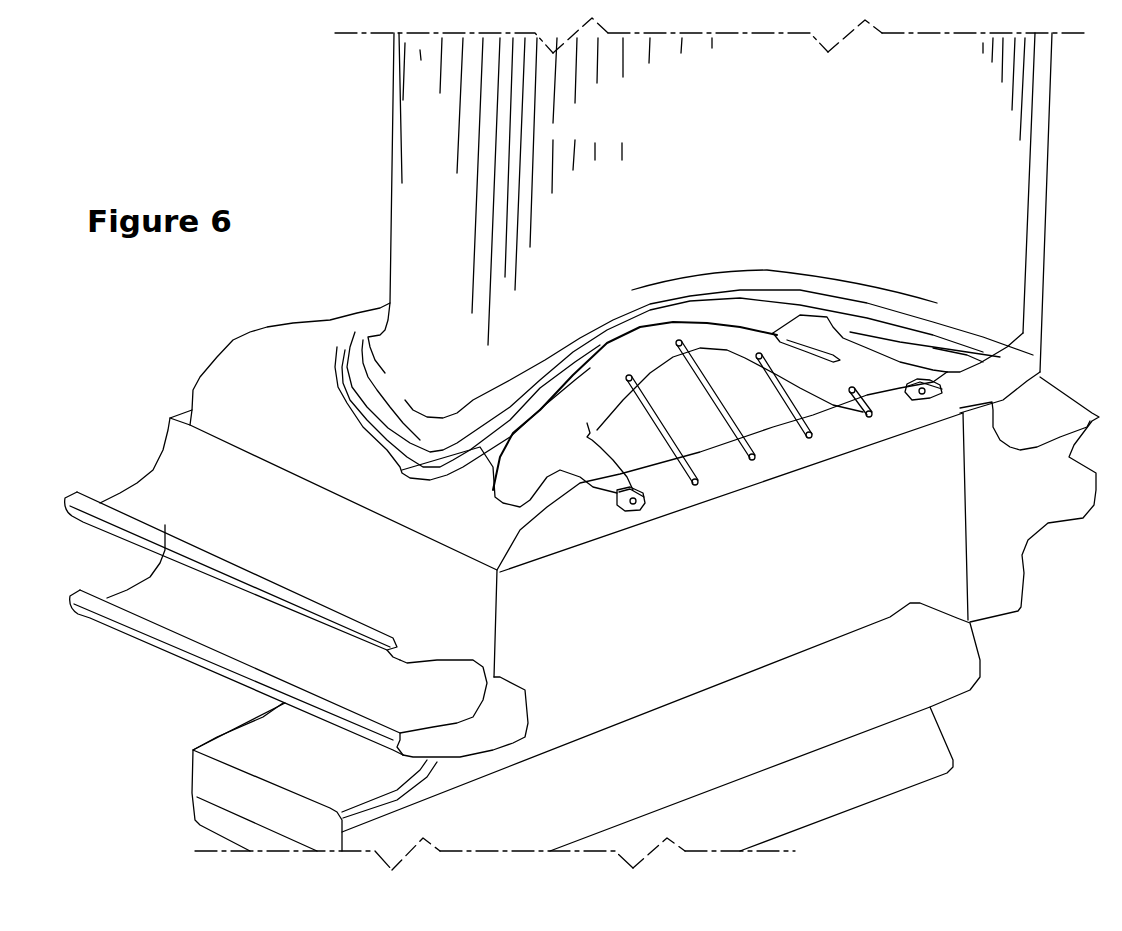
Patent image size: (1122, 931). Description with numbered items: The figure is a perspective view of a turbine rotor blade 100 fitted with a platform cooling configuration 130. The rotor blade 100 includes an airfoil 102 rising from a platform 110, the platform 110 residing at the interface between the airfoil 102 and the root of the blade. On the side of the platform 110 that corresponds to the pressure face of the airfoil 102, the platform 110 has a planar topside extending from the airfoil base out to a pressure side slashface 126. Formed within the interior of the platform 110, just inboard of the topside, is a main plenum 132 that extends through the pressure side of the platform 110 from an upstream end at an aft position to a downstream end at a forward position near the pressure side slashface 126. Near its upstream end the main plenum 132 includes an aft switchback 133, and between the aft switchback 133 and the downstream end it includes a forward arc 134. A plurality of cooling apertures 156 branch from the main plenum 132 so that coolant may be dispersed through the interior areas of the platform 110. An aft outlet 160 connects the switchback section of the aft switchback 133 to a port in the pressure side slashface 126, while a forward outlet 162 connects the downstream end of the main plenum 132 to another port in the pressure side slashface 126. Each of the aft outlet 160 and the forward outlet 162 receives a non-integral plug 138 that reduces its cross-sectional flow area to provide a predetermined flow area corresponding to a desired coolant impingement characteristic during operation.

The turbine rotor blade 100 is at (236, 339).
The airfoil 102 is at (619, 141).
The platform 110 is at (299, 398).
The pressure side slashface 126 is at (608, 528).
The platform cooling configuration 130 is at (848, 327).
The main plenum 132 is at (611, 331).
The aft switchback 133 is at (889, 378).
The forward arc 134 is at (619, 407).
The non-integral plug 138 is at (943, 382).
The cooling apertures 156 is at (700, 373).
The aft outlet 160 is at (922, 397).
The forward outlet 162 is at (627, 513).